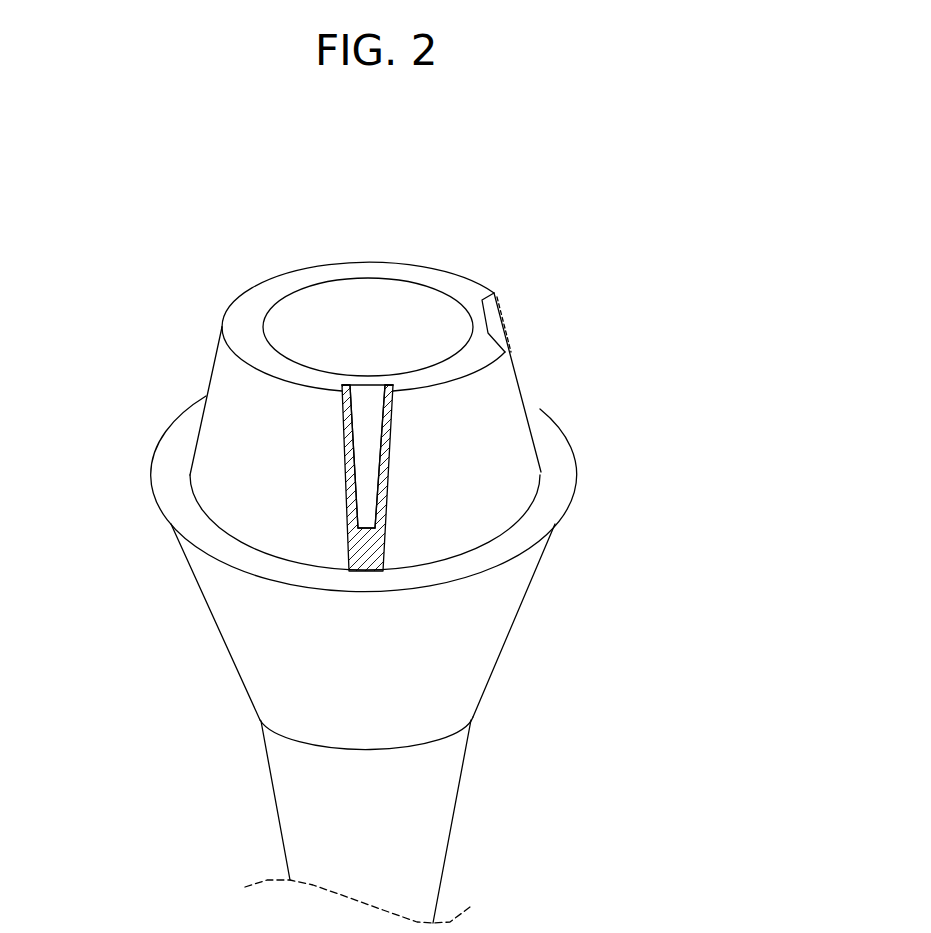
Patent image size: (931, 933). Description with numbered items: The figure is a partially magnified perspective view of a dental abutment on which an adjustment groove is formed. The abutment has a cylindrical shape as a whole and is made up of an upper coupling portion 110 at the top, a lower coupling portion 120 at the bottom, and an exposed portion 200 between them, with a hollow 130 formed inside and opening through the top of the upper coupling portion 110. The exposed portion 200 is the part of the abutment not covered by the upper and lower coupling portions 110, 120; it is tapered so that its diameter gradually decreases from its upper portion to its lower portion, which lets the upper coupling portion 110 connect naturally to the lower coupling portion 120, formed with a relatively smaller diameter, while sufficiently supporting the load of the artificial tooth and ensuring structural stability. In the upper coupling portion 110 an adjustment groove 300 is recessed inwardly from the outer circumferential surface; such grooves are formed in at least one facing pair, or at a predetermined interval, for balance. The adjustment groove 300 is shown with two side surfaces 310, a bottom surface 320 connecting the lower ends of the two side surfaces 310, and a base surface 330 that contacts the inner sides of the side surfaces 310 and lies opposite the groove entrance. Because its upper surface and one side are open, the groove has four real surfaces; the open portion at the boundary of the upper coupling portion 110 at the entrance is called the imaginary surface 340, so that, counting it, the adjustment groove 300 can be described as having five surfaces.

The upper coupling portion 110 is at (243, 428).
The lower coupling portion 120 is at (437, 783).
The hollow 130 is at (407, 322).
The exposed portion 200 is at (435, 650).
The adjustment groove 300 is at (396, 499).
The side surface 310 is at (348, 486).
The bottom surface 320 is at (365, 546).
The base surface 330 is at (370, 422).
The imaginary surface 340 is at (494, 294).